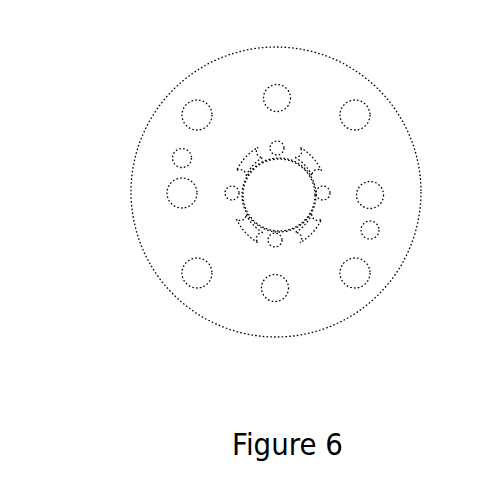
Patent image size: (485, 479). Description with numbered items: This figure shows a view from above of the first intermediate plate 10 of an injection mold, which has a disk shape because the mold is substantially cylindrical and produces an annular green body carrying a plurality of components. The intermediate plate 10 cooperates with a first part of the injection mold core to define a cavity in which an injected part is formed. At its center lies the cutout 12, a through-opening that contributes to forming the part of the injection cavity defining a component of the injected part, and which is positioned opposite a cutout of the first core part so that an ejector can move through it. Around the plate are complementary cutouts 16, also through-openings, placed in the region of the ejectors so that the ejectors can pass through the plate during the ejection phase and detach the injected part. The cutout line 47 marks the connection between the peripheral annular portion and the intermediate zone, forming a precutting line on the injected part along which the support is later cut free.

The intermediate plate 10 is at (343, 63).
The cutout 12 is at (252, 149).
The complementary cutouts 16 is at (225, 203).
The cutout line 47 is at (268, 203).